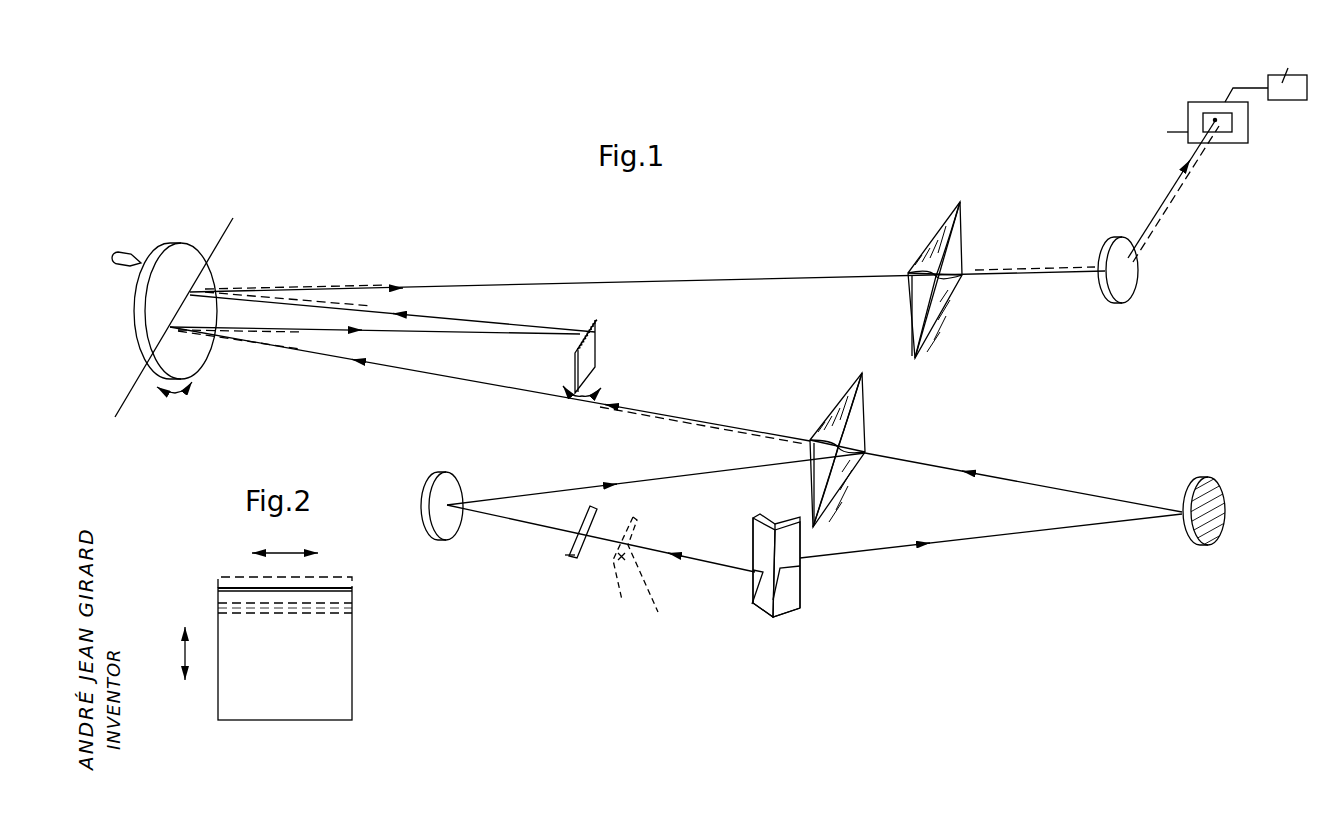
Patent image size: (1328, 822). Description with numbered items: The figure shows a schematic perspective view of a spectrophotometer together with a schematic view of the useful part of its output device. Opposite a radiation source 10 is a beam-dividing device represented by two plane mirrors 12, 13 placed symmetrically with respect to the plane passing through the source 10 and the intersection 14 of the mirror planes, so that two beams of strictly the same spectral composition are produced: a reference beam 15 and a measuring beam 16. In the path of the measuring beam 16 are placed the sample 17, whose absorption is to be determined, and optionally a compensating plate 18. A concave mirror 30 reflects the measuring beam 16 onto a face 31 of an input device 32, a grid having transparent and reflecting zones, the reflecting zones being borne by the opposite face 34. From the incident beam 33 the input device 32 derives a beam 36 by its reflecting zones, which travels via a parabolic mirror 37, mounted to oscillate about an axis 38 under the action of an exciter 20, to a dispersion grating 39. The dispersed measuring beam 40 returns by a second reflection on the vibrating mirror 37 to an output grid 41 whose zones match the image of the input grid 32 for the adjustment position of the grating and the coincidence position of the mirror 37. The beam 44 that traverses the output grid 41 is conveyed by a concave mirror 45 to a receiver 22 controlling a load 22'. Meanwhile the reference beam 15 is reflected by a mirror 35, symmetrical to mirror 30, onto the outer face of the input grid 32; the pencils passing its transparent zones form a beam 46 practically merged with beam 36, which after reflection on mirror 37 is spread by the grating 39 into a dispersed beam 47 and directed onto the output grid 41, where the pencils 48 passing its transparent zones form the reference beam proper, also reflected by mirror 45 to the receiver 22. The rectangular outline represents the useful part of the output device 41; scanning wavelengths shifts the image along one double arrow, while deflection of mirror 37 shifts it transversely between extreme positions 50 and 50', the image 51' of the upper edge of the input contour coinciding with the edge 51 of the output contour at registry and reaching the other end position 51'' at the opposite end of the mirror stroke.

In FIG. 1, the parabolic mirror 37 is at (178, 260).
In FIG. 1, the exciter 20 is at (118, 268).
In FIG. 1, the axis 38 is at (125, 405).
In FIG. 1, the dispersed beam 47 is at (367, 310).
In FIG. 1, the dispersed measuring beam 40 is at (441, 314).
In FIG. 1, the dispersion grating 39 is at (598, 333).
In FIG. 1, the output grid 41 is at (932, 230).
In FIG. 2, the output grid 41 is at (360, 697).
In FIG. 1, the pencils 48 is at (1070, 267).
In FIG. 1, the beam 44 is at (1042, 274).
In FIG. 1, the concave mirror 45 is at (1100, 300).
In FIG. 1, the receiver 22 is at (1171, 115).
In FIG. 1, the load 22' is at (1230, 101).
In FIG. 1, the beam 46 is at (703, 403).
In FIG. 1, the face 31 is at (830, 412).
In FIG. 1, the face 34 is at (860, 437).
In FIG. 1, the input device 32 is at (852, 487).
In FIG. 1, the beam 36 is at (640, 412).
In FIG. 1, the concave mirror 30 is at (443, 482).
In FIG. 1, the incident beam 33 is at (650, 476).
In FIG. 1, the mirror 35 is at (1187, 487).
In FIG. 1, the plane mirror 12 is at (757, 545).
In FIG. 1, the plane mirror 13 is at (794, 553).
In FIG. 1, the radiation source 10 is at (723, 670).
In FIG. 1, the intersection 14 is at (772, 620).
In FIG. 1, the reference beam 15 is at (852, 567).
In FIG. 1, the measuring beam 16 is at (700, 560).
In FIG. 1, the sample 17 is at (572, 560).
In FIG. 1, the compensating plate 18 is at (618, 590).
In FIG. 2, the edge 51 is at (267, 560).
In FIG. 2, the image 51' is at (256, 595).
In FIG. 2, the image position 51'' is at (285, 640).
In FIG. 2, the extreme position 50 is at (306, 562).
In FIG. 2, the extreme position 50' is at (318, 622).